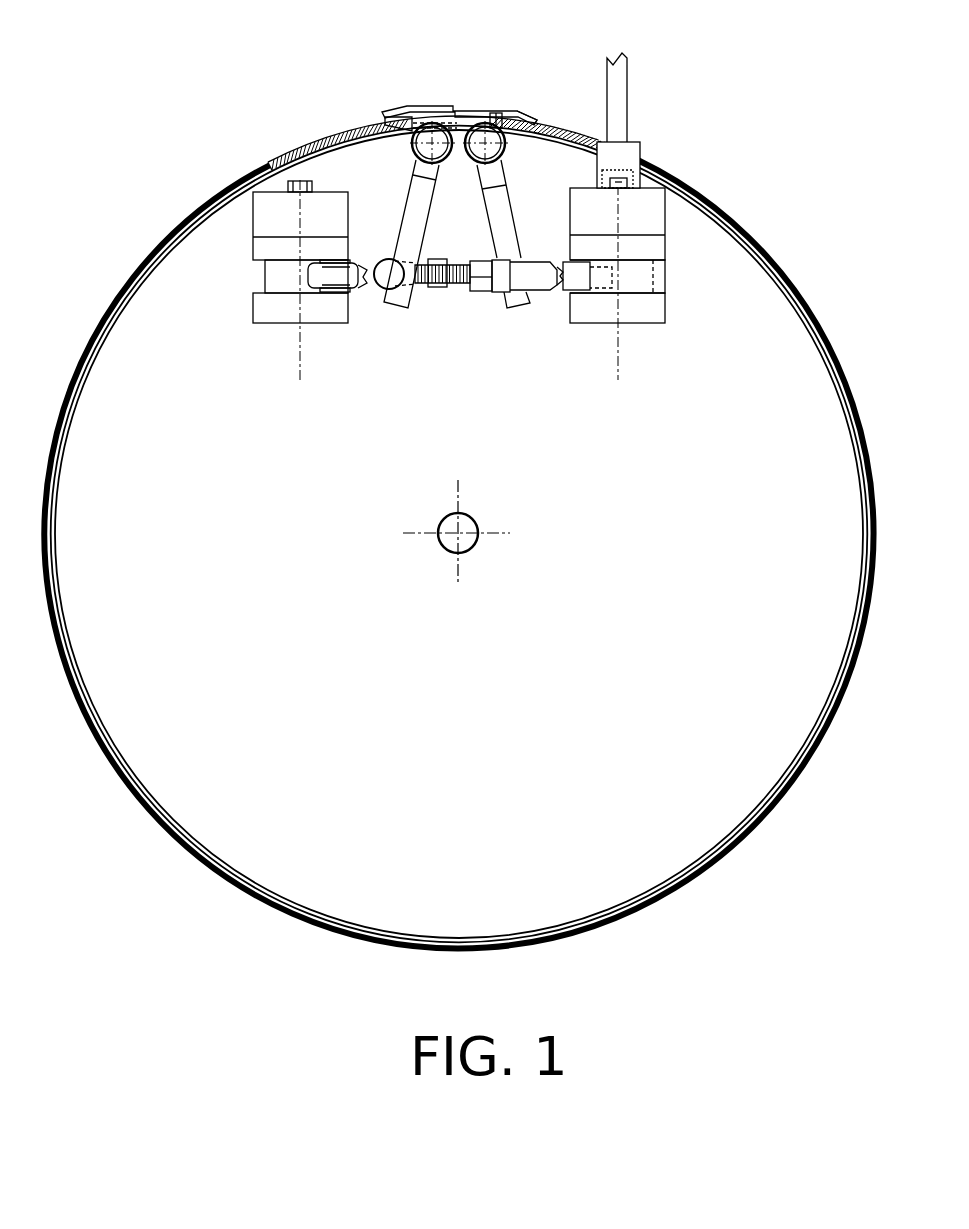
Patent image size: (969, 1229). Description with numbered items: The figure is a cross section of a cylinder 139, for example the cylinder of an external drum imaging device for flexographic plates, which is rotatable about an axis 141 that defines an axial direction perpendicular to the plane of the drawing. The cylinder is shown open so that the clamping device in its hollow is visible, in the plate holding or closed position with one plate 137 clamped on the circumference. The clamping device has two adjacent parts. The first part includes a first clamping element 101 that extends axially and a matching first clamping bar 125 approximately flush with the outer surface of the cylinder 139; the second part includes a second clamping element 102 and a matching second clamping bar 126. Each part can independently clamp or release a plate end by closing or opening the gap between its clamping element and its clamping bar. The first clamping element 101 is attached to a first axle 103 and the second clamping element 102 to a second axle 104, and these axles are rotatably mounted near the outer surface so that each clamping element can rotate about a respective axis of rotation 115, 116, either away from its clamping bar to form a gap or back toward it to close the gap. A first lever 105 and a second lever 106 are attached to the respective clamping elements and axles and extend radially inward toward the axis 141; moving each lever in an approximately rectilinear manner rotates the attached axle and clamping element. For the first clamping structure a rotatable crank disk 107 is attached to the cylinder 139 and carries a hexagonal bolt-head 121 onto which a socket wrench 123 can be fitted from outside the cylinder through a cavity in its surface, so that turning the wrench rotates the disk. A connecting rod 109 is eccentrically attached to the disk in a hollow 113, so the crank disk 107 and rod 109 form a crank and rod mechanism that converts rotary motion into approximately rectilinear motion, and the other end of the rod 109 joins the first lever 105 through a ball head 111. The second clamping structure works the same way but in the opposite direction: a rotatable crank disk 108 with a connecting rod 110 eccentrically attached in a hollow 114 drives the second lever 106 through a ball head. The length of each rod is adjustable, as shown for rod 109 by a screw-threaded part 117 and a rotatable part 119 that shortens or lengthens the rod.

The first clamping element 101 is at (520, 104).
The second clamping element 102 is at (415, 105).
The first axle 103 is at (403, 116).
The second axle 104 is at (513, 108).
The first lever 105 is at (413, 228).
The second lever 106 is at (507, 229).
The rotatable crank disk 107 is at (650, 208).
The rotatable crank disk 108 is at (272, 210).
The connecting rod 109 is at (498, 284).
The connecting rod 110 is at (428, 286).
The ball head 111 is at (380, 262).
The hollow 113 is at (556, 296).
The hollow 114 is at (312, 290).
The axis of rotation 115 is at (441, 152).
The axis of rotation 116 is at (500, 150).
The screw-threaded part of the rod 117 is at (428, 260).
The rotatable part of the rod 119 is at (473, 263).
The hexagonal bolt-head 121 is at (651, 169).
The socket wrench 123 is at (606, 52).
The first clamping bar 125 is at (568, 152).
The second clamping bar 126 is at (341, 148).
The plate 137 is at (253, 172).
The cylinder 139 is at (192, 218).
The axis 141 is at (460, 525).